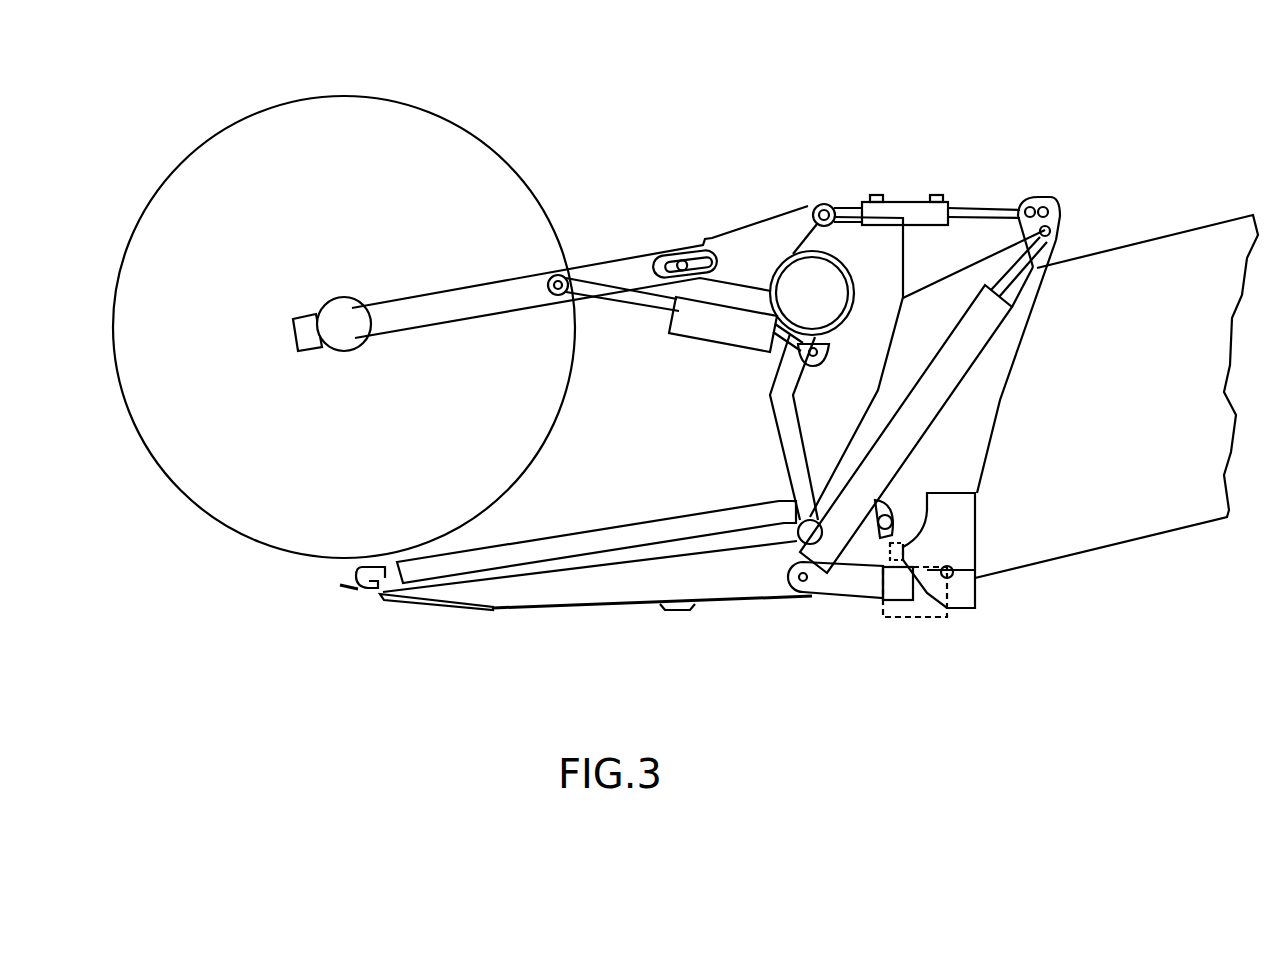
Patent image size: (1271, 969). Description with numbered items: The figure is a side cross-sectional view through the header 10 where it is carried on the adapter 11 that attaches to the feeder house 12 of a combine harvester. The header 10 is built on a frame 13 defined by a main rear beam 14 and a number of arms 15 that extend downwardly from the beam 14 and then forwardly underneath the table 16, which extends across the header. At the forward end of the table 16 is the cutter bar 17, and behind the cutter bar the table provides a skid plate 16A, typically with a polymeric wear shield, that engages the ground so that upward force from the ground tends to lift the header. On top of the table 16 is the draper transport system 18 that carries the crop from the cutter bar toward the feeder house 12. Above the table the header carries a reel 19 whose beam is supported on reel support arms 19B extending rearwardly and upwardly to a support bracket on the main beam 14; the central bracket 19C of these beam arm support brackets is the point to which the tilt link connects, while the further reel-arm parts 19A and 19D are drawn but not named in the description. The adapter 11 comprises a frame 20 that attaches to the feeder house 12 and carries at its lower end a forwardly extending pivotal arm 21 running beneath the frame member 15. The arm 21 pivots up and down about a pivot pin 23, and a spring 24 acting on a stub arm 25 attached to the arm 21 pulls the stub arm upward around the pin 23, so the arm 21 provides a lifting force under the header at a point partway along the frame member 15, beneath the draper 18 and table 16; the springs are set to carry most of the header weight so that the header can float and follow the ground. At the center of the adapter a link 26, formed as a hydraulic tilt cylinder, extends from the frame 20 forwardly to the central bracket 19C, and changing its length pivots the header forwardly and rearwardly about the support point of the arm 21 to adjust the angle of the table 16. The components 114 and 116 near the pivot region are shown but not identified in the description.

The header 10 is at (653, 222).
The adapter 11 is at (1022, 180).
The feeder house 12 is at (1178, 199).
The frame 13 is at (810, 284).
The main rear beam 14 is at (866, 321).
The downwardly and forwardly extending arm 15 is at (790, 452).
The table 16 is at (540, 572).
The skid plate 16A is at (422, 605).
The cutter bar 17 is at (350, 594).
The draper transport system 18 is at (623, 540).
The reel 19 is at (508, 421).
The hub 19A is at (344, 354).
The reel support arm 19B is at (424, 303).
The central bracket 19C is at (750, 258).
The wheel actuator 19D is at (687, 318).
The frame 20 is at (987, 370).
The pivotal arm 21 is at (927, 592).
The pivot pin 23 is at (953, 570).
The spring 24 is at (897, 433).
The stub arm 25 is at (855, 582).
The link 26 is at (907, 200).
The sensor housing 114 is at (907, 618).
The bracket plate 116 is at (977, 493).